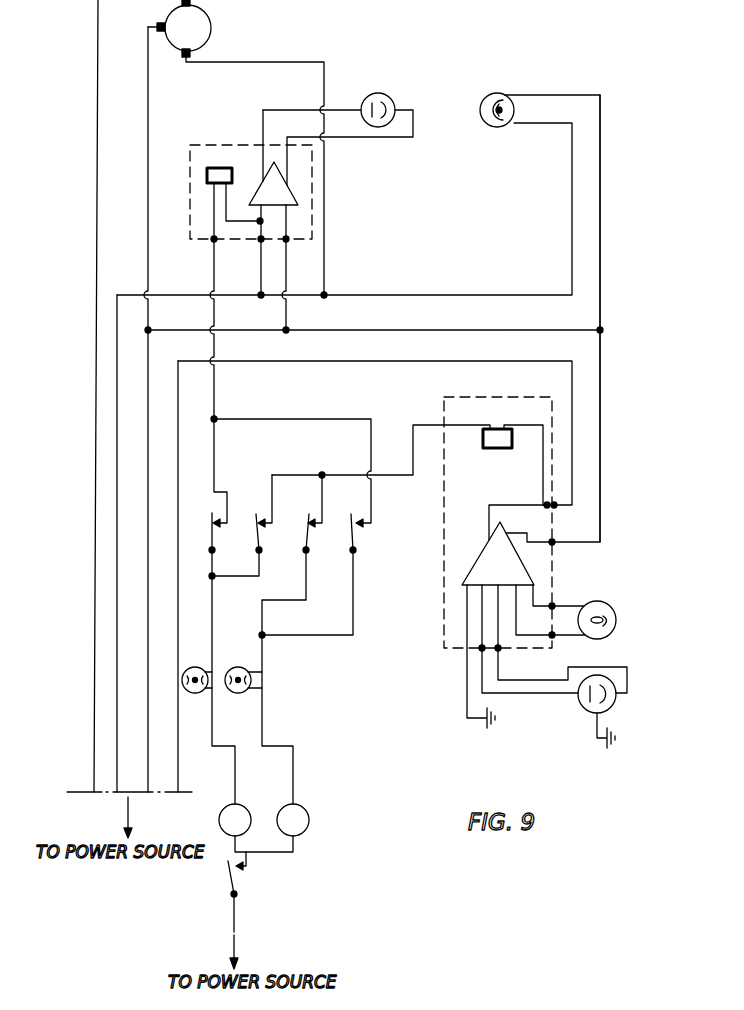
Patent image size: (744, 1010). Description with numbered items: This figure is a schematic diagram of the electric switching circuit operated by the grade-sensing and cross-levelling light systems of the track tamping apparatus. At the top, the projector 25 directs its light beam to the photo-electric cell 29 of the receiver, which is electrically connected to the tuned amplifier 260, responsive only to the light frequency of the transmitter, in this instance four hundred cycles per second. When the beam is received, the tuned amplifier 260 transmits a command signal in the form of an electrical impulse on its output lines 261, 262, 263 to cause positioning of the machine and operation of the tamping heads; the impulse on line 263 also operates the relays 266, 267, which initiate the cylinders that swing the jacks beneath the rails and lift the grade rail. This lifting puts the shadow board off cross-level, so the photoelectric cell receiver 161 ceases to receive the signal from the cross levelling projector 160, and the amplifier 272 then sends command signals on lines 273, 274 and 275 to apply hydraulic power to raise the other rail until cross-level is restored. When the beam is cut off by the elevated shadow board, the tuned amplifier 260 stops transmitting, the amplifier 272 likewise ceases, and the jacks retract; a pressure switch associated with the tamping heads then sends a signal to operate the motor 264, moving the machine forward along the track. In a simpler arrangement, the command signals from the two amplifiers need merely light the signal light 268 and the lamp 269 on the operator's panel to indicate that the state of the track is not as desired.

The motor 264 is at (207, 21).
The photo-electric cell 29 is at (383, 94).
The projector 25 is at (498, 94).
The tuned amplifier 260 is at (296, 196).
The line 263 is at (225, 223).
The line 262 is at (260, 256).
The line 261 is at (287, 272).
The line 274 is at (444, 362).
The line 275 is at (600, 388).
The line 273 is at (430, 424).
The amplifier 272 is at (480, 548).
The cross levelling projector 160 is at (612, 585).
The photoelectric cell receiver 161 is at (578, 706).
The signal light 268 is at (201, 670).
The lamp 269 is at (244, 690).
The relay 266 is at (218, 822).
The relay 267 is at (309, 818).